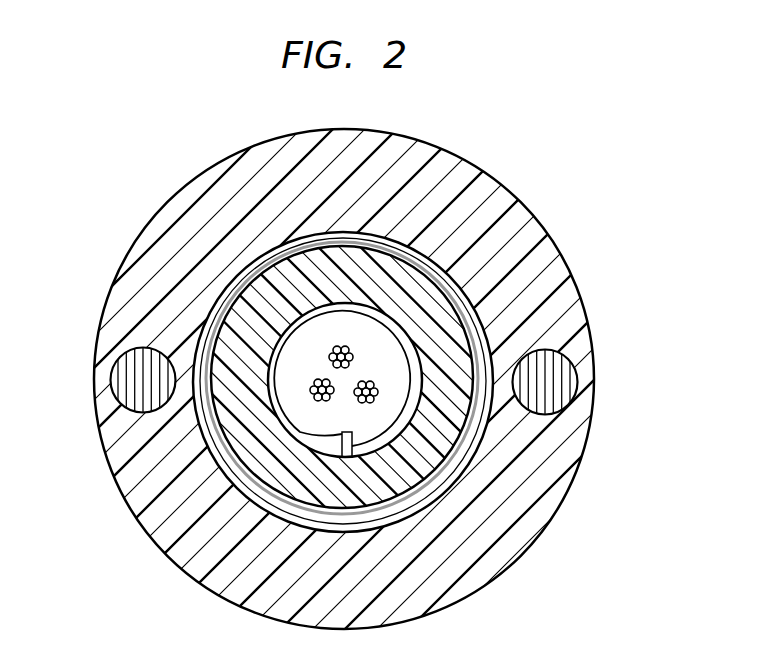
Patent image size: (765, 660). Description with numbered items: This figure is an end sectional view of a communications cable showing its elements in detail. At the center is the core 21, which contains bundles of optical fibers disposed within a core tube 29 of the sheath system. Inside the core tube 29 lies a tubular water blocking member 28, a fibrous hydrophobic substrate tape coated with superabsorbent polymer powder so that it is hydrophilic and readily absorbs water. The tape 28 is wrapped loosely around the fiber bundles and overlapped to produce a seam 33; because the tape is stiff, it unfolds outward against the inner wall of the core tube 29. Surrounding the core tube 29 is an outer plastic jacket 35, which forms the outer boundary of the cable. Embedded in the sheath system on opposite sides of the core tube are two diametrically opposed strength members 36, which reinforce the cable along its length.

The core 21 is at (326, 373).
The water blocking member 28 is at (392, 331).
The core tube 29 is at (331, 294).
The seam 33 is at (342, 433).
The outer plastic jacket 35 is at (569, 272).
The strength members 36 is at (111, 380).